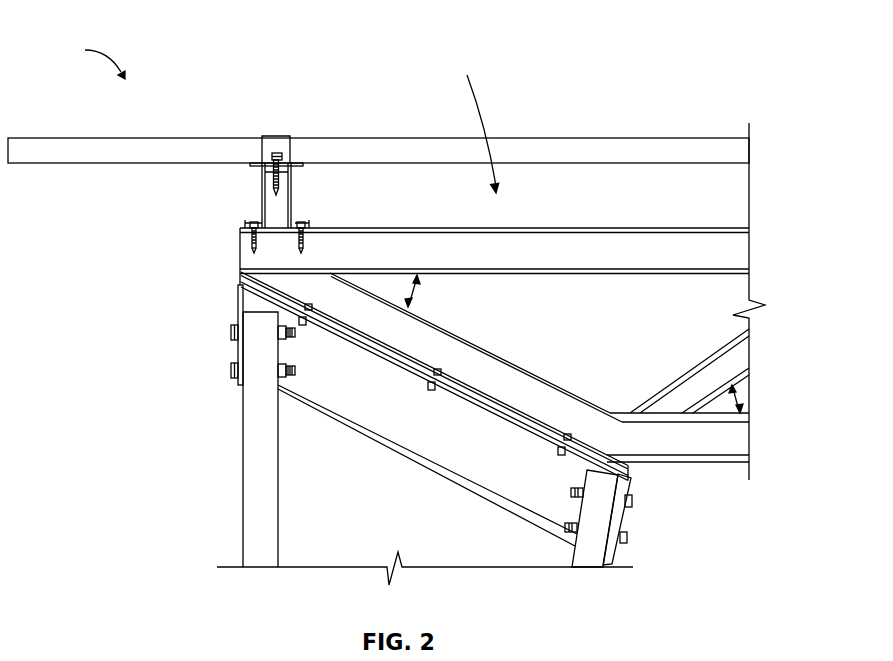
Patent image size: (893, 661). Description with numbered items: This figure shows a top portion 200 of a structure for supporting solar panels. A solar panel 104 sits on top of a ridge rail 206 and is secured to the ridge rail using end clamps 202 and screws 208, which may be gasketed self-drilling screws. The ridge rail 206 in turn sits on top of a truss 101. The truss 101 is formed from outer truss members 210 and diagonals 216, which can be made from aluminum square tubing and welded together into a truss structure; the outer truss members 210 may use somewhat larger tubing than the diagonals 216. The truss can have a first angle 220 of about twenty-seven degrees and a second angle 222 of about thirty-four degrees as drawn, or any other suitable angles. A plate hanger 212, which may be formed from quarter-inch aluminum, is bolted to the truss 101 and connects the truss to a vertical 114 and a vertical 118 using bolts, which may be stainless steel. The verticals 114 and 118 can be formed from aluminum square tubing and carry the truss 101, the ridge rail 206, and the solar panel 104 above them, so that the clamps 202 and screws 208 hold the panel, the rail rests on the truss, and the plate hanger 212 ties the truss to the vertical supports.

The mounting assembly 200 is at (82, 60).
The truss 101 is at (475, 123).
The solar panel 104 is at (76, 138).
The end clamp 202 is at (266, 136).
The ridge rail 206 is at (262, 177).
The screw 208 is at (268, 190).
The outer truss member 210 is at (240, 258).
The plate hanger 212 is at (238, 300).
The vertical 114 is at (243, 408).
The diagonal 216 is at (655, 393).
The vertical 118 is at (577, 549).
The angle 220 is at (420, 288).
The angle 222 is at (739, 399).